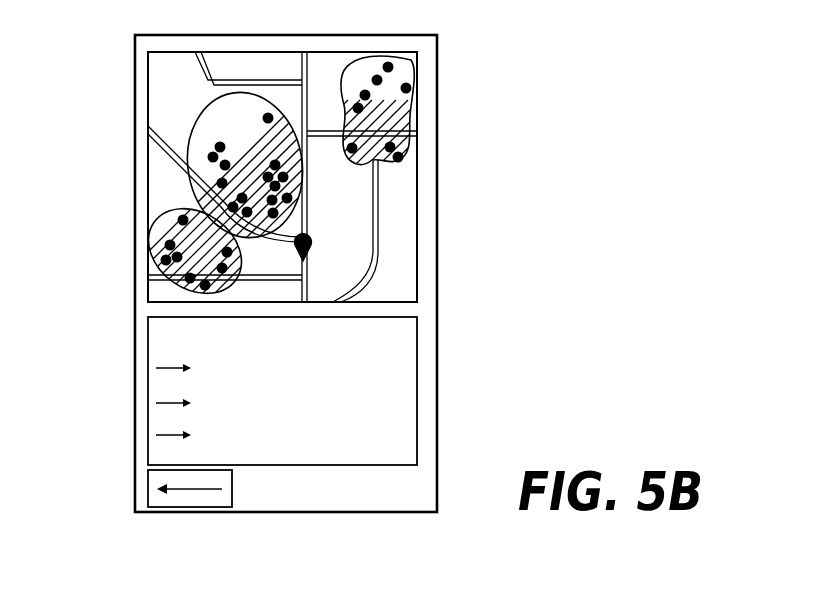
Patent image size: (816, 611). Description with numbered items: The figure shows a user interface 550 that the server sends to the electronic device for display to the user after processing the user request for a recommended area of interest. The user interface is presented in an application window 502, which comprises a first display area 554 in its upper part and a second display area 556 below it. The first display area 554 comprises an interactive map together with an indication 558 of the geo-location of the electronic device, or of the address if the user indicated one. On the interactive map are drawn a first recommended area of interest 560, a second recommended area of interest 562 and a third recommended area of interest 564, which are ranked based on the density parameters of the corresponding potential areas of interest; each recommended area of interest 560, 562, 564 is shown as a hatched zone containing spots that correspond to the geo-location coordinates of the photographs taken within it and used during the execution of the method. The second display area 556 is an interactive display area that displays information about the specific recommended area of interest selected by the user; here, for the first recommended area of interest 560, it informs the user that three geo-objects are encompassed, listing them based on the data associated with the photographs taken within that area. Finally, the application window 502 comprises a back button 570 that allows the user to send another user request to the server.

The user interface 550 is at (329, 303).
The application window 502 is at (440, 200).
The first display area 554 is at (289, 189).
The second display area 556 is at (418, 388).
The indication 558 is at (306, 247).
The first recommended area of interest 560 is at (162, 128).
The second recommended area of interest 562 is at (152, 256).
The third recommended area of interest 564 is at (410, 68).
The back button 570 is at (178, 508).